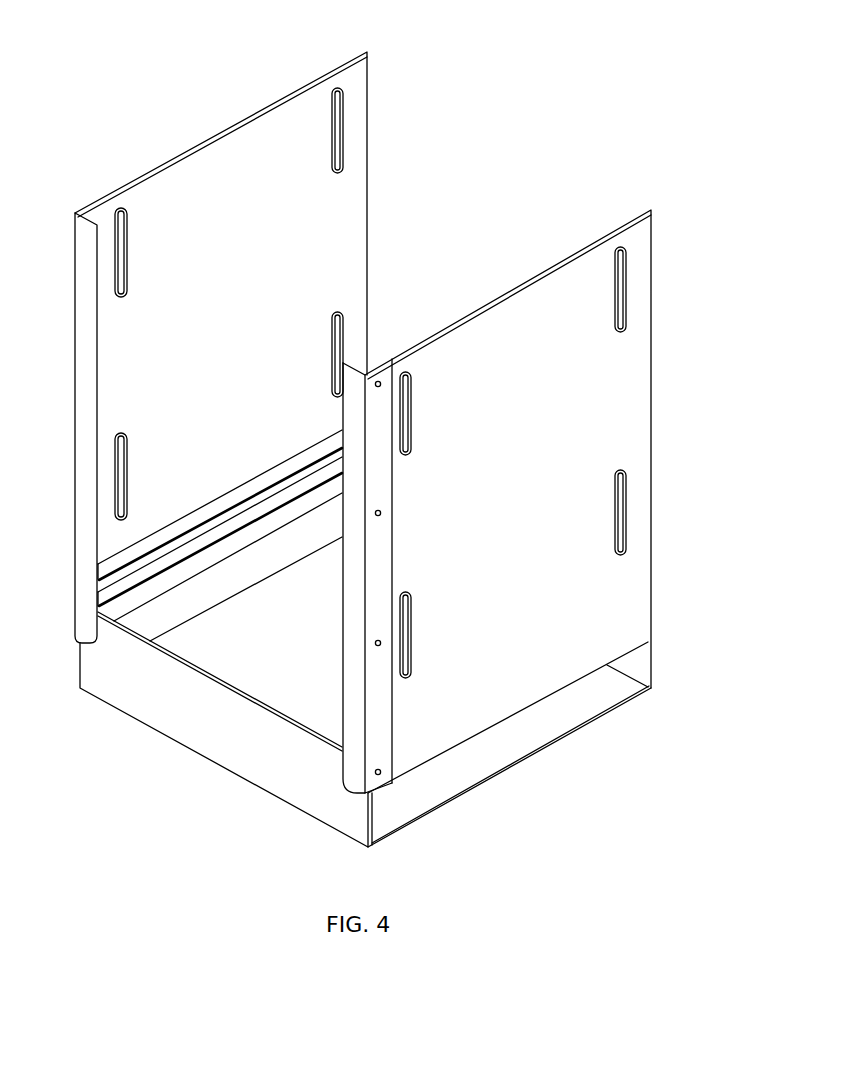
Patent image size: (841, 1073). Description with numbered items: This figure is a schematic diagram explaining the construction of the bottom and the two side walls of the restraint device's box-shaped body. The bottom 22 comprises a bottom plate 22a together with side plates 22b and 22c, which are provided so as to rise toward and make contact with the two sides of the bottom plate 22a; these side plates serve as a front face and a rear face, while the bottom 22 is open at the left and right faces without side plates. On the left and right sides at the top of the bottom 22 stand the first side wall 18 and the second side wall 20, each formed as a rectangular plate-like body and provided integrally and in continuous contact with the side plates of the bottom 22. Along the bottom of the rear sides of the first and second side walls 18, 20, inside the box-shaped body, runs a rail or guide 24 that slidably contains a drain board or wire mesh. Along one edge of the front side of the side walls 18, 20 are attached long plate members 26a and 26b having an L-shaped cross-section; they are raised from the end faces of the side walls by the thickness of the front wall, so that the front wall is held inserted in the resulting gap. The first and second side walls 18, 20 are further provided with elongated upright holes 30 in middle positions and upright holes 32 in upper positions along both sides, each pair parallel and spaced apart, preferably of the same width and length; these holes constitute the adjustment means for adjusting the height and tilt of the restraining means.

The first side wall 18 is at (471, 536).
The second side wall 20 is at (195, 366).
The bottom 22 is at (427, 670).
The bottom plate 22a is at (588, 697).
The side plate 22b is at (345, 813).
The side plate 22c is at (635, 660).
The rail or guide 24 is at (120, 553).
The long plate member 26a is at (352, 732).
The long plate member 26b is at (87, 545).
The upright holes 30 is at (341, 333).
The upright holes 32 is at (340, 127).